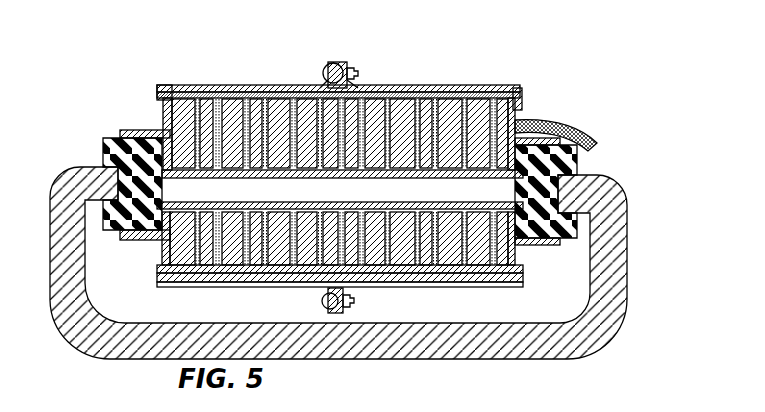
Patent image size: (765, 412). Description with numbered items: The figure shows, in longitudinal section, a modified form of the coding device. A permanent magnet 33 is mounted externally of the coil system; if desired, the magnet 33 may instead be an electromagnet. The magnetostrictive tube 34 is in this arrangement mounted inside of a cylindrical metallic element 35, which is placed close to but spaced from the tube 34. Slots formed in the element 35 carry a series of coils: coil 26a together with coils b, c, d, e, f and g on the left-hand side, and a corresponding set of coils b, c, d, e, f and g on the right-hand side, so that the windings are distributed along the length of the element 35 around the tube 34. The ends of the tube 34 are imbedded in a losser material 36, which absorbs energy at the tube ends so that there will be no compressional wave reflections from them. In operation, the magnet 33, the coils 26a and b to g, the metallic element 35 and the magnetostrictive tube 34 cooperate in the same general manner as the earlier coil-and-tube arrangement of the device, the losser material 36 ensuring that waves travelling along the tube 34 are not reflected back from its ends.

The permanent magnet 33 is at (612, 197).
The magnetostrictive tube 34 is at (510, 179).
The cylindrical metallic element 35 is at (455, 103).
The losser material 36 is at (577, 153).
The coil 26a is at (345, 99).
The coil b is at (320, 100).
The coil c is at (297, 100).
The coil d is at (268, 100).
The coil e is at (247, 103).
The coil f is at (220, 103).
The coil g is at (192, 103).